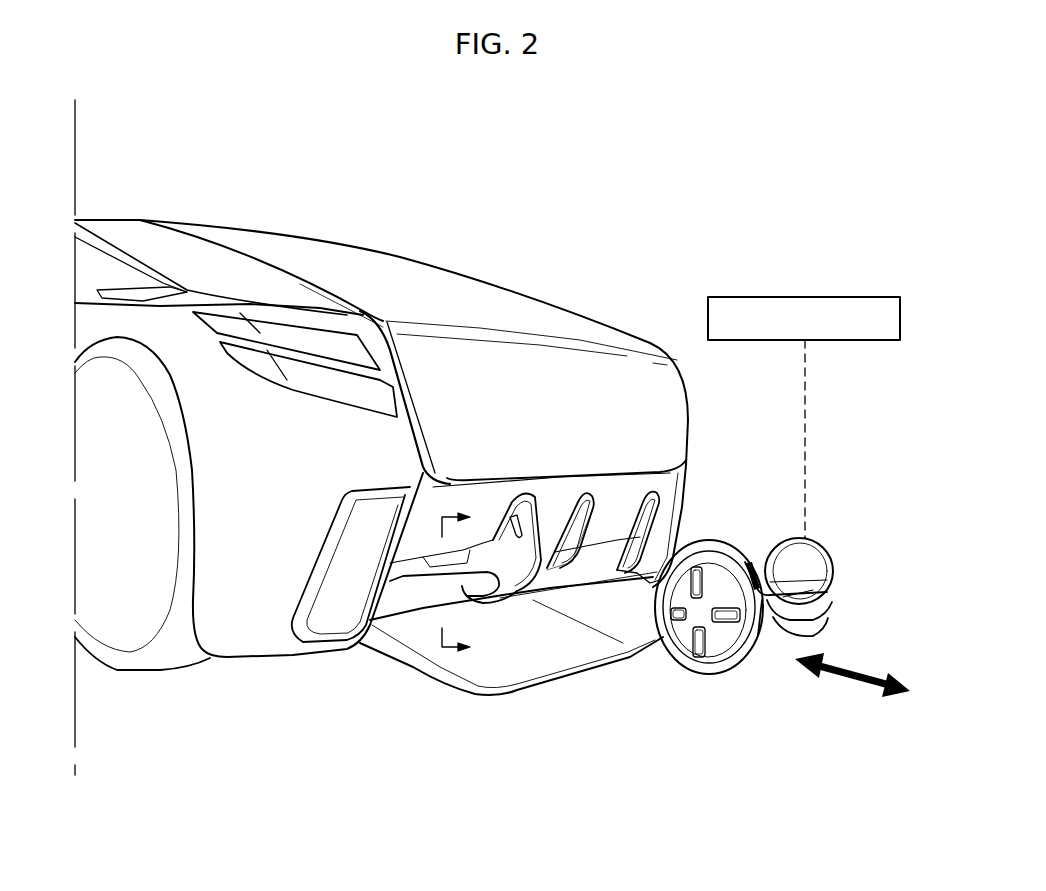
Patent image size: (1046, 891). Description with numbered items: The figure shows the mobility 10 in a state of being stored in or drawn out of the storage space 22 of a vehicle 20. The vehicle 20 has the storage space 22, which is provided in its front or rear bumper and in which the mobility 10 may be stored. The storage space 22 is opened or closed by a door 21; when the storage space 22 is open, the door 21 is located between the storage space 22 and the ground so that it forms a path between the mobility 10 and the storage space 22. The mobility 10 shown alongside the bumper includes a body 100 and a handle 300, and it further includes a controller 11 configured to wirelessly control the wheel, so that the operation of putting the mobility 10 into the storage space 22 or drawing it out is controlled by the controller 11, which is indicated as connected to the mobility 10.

The vehicle 20 is at (237, 213).
The door 21 is at (512, 670).
The storage space 22 is at (577, 567).
The controller 11 is at (810, 297).
The mobility 10 is at (837, 551).
The body 100 is at (772, 627).
The handle 300 is at (830, 602).